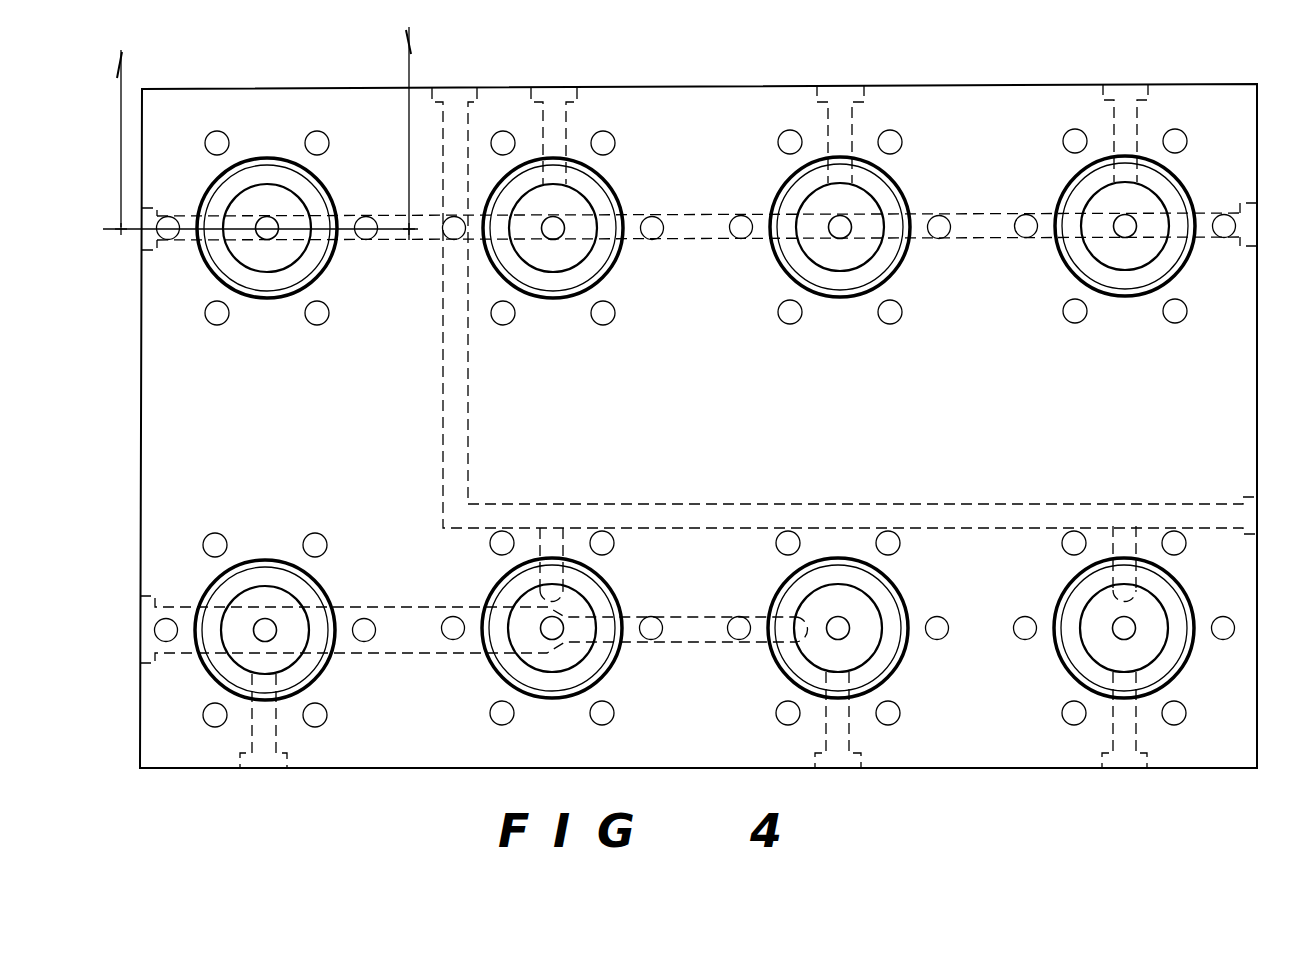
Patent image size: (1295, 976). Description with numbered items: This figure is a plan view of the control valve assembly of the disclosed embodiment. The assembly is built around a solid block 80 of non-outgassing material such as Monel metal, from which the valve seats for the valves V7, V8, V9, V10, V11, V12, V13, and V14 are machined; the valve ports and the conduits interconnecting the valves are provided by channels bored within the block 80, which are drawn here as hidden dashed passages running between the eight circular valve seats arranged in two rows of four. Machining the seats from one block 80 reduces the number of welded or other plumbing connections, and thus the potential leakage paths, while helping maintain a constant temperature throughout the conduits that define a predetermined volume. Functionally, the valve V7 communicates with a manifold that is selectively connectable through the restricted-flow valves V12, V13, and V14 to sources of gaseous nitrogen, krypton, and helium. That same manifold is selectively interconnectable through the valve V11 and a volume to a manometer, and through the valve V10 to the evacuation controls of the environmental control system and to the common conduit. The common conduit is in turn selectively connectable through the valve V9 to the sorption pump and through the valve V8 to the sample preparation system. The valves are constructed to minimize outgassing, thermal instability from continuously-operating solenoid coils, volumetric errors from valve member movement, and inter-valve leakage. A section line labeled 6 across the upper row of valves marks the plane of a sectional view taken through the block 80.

The valve block 80 is at (140, 509).
The section line 6- 6 is at (264, 132).
The valve V7 is at (1193, 599).
The valve V8 is at (1185, 176).
The valve V9 is at (612, 174).
The valve V10 is at (900, 172).
The valve V11 is at (905, 601).
The restricted-flow valve V12 is at (618, 603).
The restricted-flow valve V13 is at (275, 158).
The restricted-flow valve V14 is at (260, 558).